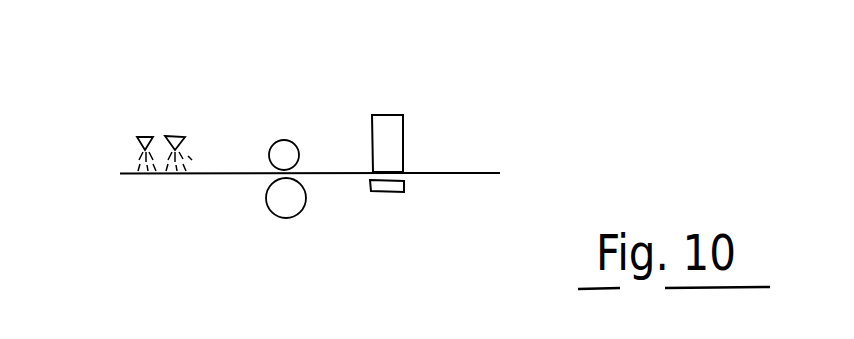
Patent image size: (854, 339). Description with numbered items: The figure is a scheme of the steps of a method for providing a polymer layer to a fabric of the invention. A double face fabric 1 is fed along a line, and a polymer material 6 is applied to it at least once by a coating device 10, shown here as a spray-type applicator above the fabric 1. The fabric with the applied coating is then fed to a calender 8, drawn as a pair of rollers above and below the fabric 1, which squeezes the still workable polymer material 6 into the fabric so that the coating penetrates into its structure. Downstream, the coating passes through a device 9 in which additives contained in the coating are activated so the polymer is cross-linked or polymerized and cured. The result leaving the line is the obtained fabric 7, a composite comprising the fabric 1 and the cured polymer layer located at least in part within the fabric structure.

The double face fabric 1 is at (128, 180).
The polymer material 6 is at (215, 172).
The obtained fabric 7 is at (448, 173).
The calender 8 is at (300, 233).
The cross-linking device 9 is at (387, 132).
The coating device 10 is at (141, 134).